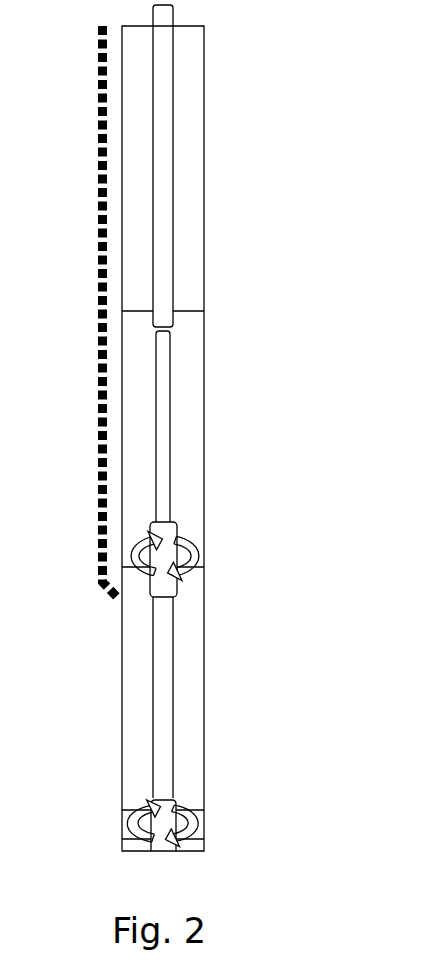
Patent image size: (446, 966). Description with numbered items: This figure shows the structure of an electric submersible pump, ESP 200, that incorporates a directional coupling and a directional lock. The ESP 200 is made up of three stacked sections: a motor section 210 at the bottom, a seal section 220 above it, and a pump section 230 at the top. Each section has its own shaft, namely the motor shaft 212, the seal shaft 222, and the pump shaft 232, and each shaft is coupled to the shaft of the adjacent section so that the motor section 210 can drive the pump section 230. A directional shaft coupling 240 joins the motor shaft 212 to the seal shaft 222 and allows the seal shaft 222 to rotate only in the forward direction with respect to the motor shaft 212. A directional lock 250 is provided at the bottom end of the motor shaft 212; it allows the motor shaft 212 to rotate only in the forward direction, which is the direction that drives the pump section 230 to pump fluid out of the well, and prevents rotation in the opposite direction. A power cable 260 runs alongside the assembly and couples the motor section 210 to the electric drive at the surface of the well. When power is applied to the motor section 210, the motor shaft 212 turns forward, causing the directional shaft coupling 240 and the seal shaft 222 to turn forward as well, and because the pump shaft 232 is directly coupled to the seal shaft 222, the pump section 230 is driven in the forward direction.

The ESP 200 is at (298, 89).
The motor section 210 is at (204, 681).
The motor shaft 212 is at (153, 661).
The seal section 220 is at (204, 349).
The seal shaft 222 is at (170, 436).
The pump section 230 is at (204, 164).
The pump shaft 232 is at (173, 248).
The directional shaft coupling 240 is at (177, 587).
The directional lock 250 is at (150, 823).
The power cable 260 is at (97, 288).